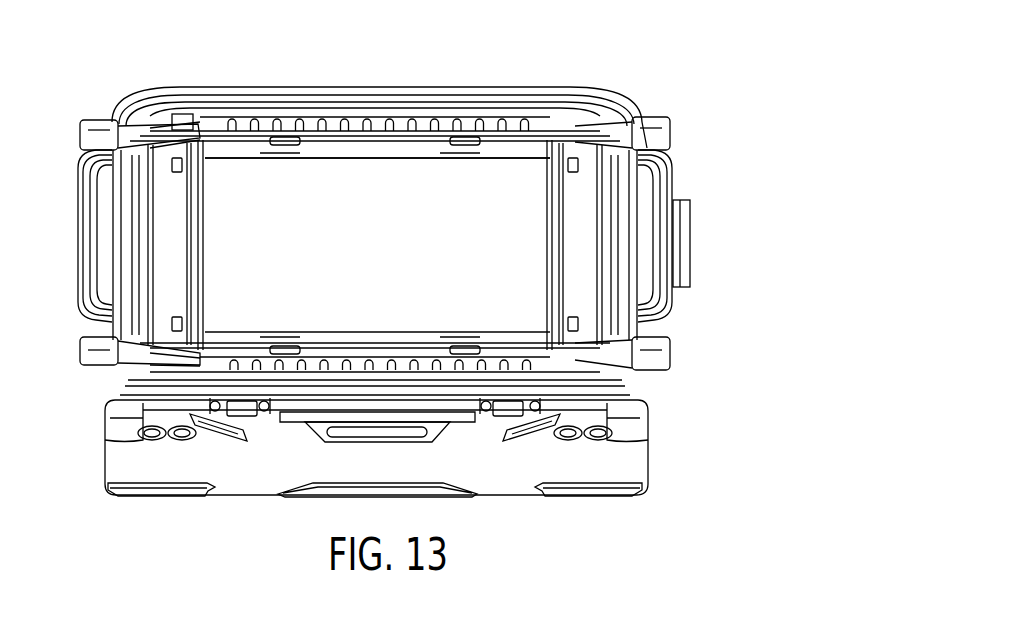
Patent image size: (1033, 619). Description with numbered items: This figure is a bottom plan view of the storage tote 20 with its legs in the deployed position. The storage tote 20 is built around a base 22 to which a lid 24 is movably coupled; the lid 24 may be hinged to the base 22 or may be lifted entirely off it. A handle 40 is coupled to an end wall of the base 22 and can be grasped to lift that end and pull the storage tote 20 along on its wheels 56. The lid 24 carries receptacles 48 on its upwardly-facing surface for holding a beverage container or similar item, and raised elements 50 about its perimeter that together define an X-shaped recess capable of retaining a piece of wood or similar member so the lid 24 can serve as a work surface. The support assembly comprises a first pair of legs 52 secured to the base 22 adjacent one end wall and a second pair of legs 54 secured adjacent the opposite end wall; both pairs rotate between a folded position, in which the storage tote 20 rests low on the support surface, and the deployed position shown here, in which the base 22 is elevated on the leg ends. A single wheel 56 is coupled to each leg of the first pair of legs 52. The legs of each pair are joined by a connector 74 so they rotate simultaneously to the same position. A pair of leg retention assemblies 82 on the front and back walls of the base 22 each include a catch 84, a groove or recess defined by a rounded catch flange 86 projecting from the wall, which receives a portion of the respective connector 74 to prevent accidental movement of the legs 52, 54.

The storage tote 20 is at (596, 64).
The base 22 is at (634, 92).
The lid 24 is at (633, 470).
The handle 40 is at (684, 250).
The receptacle 48 is at (163, 427).
The raised element 50 is at (123, 435).
The first pair of legs 52 is at (98, 132).
The second pair of legs 54 is at (662, 128).
The wheel 56 is at (177, 122).
The connector 74 is at (128, 245).
The leg retention assembly 82 is at (432, 197).
The catch 84 is at (282, 152).
The catch flange 86 is at (298, 144).